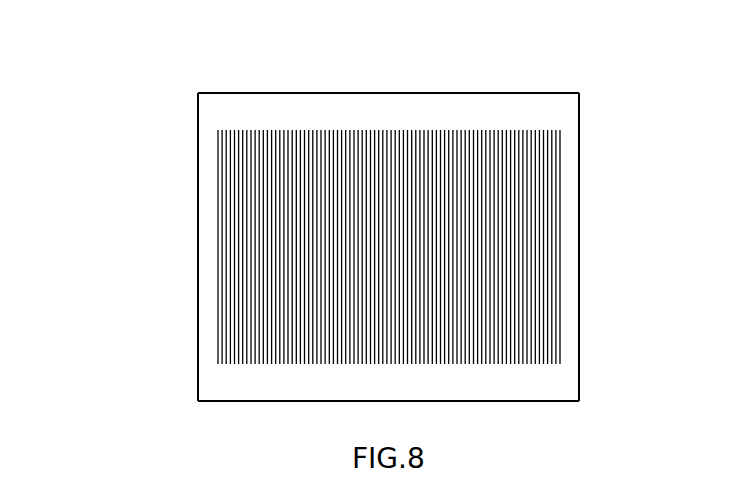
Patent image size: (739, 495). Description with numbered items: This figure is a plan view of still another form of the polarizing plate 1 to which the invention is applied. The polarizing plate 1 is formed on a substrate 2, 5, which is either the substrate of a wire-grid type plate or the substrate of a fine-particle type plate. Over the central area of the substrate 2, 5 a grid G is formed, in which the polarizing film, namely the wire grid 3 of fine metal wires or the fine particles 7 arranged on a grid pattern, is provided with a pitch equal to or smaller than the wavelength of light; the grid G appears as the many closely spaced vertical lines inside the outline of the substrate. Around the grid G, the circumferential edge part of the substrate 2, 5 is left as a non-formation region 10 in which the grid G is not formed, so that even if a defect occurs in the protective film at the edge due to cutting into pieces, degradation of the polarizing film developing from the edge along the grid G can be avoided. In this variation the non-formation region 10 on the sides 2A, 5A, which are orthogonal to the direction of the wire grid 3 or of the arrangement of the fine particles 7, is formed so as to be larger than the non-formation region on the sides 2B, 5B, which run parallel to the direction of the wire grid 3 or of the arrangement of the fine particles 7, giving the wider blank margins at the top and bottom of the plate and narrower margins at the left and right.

The polarizing plate 1 is at (115, 72).
The substrate 2 is at (386, 236).
The substrate 5 is at (197, 280).
The sides orthogonal to the wire grid direction 2A is at (325, 236).
The sides orthogonal to the fine particle arrangement direction 5A is at (463, 93).
The sides parallel to the wire grid direction 2B is at (386, 247).
The sides parallel to the fine particle arrangement direction 5B is at (197, 145).
The wire grid 3 is at (424, 204).
The fine particles 7 is at (424, 204).
The non-formation region 10 is at (298, 113).
The grid G is at (393, 170).